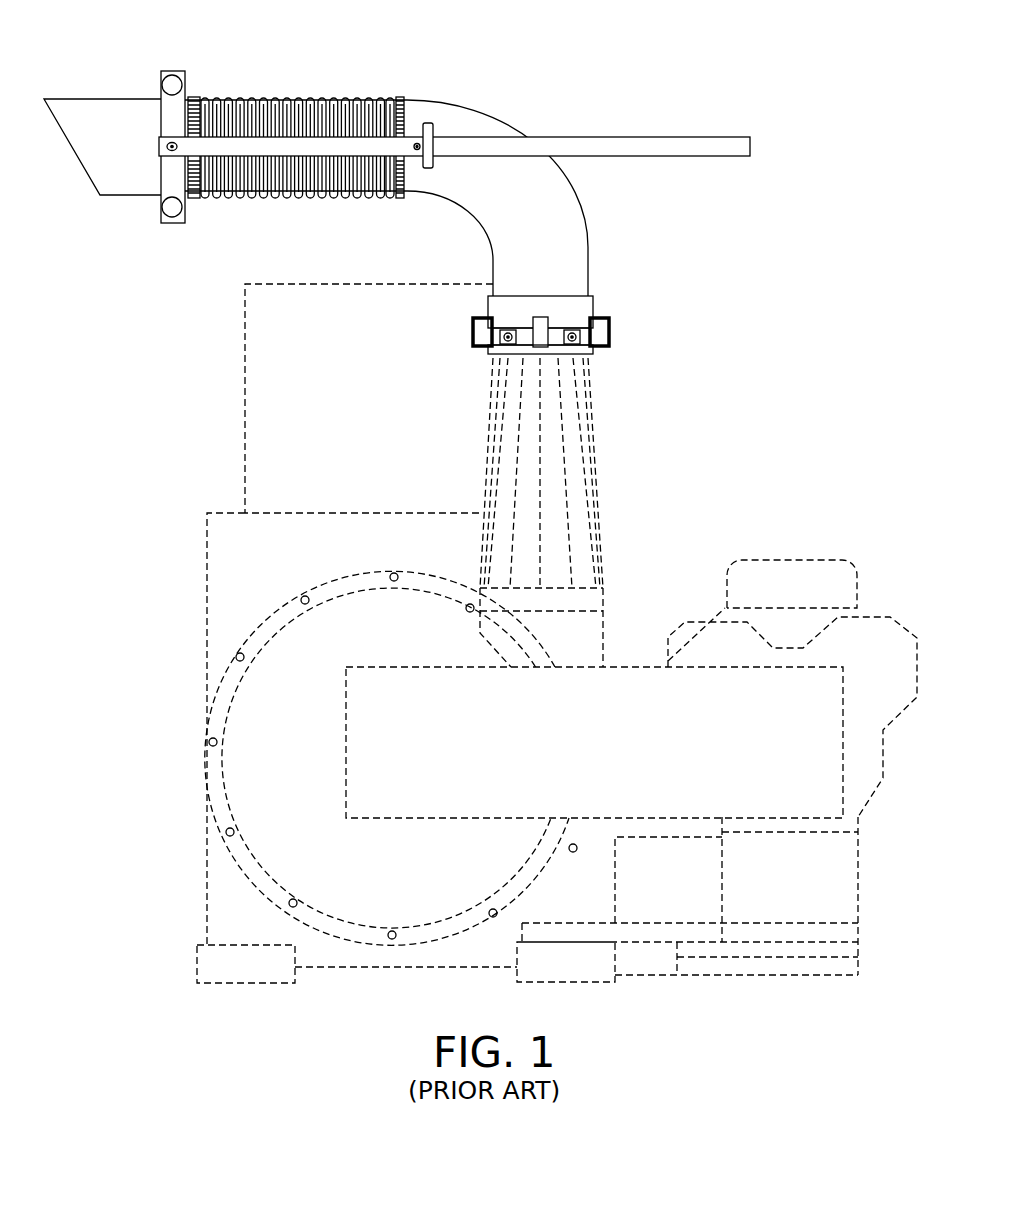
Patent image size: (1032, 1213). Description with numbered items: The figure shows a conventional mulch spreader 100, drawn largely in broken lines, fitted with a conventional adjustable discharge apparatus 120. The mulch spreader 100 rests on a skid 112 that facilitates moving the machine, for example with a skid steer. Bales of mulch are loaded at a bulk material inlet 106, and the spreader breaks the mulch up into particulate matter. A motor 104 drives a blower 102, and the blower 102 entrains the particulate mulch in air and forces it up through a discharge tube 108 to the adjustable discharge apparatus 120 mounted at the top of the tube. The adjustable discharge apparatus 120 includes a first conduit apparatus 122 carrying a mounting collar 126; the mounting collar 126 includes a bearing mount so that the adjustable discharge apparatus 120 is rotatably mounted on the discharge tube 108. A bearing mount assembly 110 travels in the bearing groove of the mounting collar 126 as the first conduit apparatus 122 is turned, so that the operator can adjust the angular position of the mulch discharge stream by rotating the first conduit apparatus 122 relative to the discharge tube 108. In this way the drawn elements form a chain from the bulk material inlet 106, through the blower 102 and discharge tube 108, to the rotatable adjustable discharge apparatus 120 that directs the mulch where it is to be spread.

The mulch spreader 100 is at (480, 506).
The blower 102 is at (358, 758).
The motor 104 is at (792, 650).
The bulk material inlet 106 is at (483, 633).
The discharge tube 108 is at (577, 473).
The bearing mount assembly 110 is at (503, 325).
The skid 112 is at (211, 969).
The adjustable discharge apparatus 120 is at (397, 157).
The first conduit apparatus 122 is at (560, 198).
The mounting collar 126 is at (473, 328).